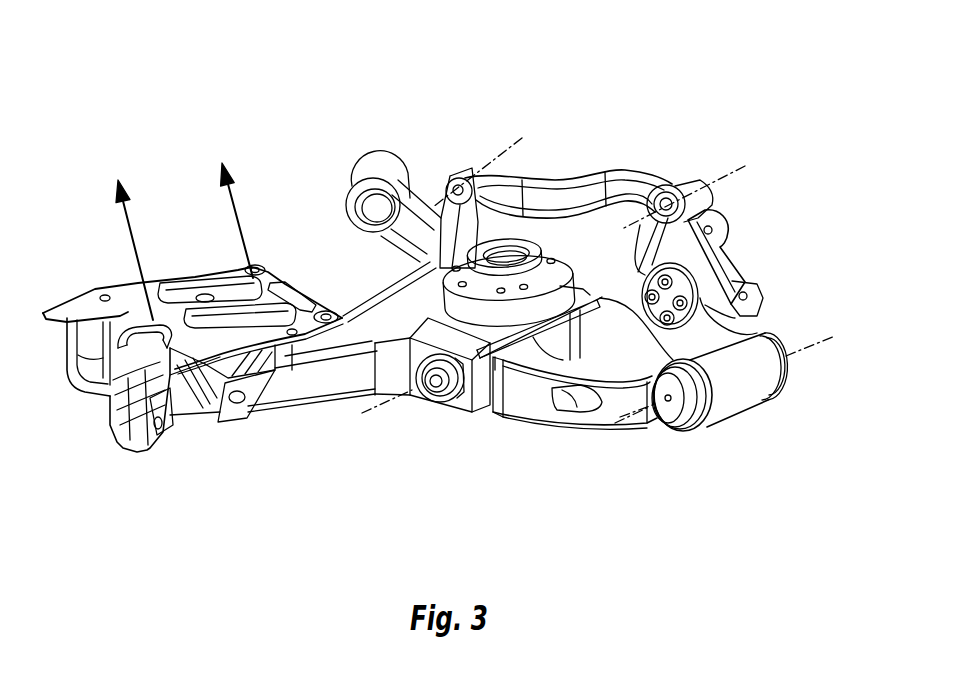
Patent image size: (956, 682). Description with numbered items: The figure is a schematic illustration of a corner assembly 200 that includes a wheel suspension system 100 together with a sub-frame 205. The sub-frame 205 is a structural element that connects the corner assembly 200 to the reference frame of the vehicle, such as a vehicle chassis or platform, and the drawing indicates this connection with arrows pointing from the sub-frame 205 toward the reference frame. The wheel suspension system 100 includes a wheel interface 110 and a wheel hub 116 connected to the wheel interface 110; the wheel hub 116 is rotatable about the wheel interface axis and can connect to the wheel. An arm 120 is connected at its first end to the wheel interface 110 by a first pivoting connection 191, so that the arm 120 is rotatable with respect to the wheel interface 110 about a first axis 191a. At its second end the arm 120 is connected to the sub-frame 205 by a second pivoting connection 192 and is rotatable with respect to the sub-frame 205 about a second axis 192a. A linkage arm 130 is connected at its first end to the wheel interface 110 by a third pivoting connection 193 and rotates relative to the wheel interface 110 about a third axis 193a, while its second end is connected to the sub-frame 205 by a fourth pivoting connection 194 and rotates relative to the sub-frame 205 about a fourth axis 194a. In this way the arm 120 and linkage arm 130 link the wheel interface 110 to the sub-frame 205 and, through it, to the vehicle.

The corner assembly 200 is at (82, 22).
The wheel suspension system 100 is at (712, 93).
The sub-frame 205 is at (352, 311).
The fourth pivoting connection 194 is at (452, 176).
The fourth axis 194a is at (518, 140).
The linkage arm 130 is at (552, 178).
The third pivoting connection 193 is at (680, 190).
The third axis 193a is at (744, 167).
The wheel interface 110 is at (720, 258).
The wheel hub 116 is at (737, 283).
The arm 120 is at (547, 417).
The first pivoting connection 191 is at (670, 420).
The first axis 191a is at (790, 358).
The second pivoting connection 192 is at (443, 410).
The second axis 192a is at (363, 415).